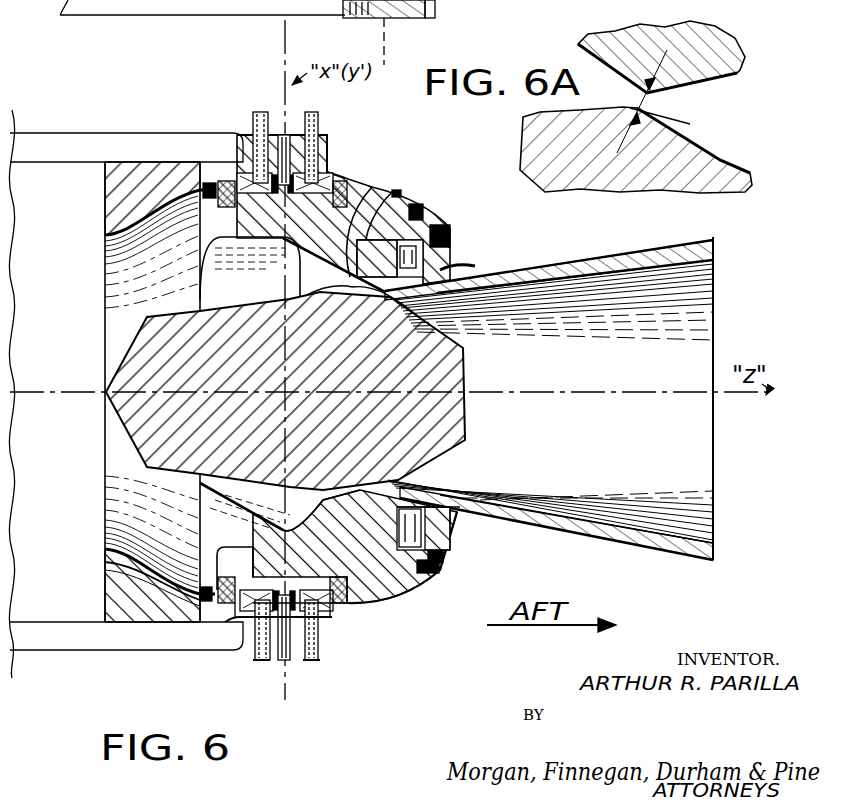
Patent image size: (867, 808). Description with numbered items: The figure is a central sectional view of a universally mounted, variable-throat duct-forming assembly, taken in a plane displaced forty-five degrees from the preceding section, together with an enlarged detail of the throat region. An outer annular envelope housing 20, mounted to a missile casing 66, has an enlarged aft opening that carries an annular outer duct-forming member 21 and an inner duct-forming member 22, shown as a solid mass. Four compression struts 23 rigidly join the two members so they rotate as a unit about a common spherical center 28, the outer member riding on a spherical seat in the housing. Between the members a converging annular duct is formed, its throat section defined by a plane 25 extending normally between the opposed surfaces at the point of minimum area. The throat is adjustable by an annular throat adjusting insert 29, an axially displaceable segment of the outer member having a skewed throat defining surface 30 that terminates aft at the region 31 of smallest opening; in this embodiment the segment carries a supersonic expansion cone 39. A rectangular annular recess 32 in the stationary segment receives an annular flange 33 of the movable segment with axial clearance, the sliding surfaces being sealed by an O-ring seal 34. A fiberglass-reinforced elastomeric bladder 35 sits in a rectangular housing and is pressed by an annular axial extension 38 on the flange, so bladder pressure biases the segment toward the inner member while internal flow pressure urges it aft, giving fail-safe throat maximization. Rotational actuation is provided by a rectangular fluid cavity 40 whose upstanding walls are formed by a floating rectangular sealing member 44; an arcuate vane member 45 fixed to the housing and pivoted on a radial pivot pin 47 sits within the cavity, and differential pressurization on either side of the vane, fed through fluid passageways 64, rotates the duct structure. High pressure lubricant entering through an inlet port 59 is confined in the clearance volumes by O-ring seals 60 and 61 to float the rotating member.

In FIG. 6, the outer annular envelope housing 20 is at (333, 163).
In FIG. 6, the annular outer duct-forming member 21 is at (312, 236).
In FIG. 6, the inner duct-forming member 22 is at (358, 383).
In FIG. 6A, the inner duct-forming member 22 is at (720, 163).
In FIG. 6, the compression struts 23 is at (285, 304).
In FIG. 6A, the plane 25 is at (680, 122).
In FIG. 6, the spherical center 28 is at (280, 399).
In FIG. 6, the annular throat adjusting insert 29 is at (427, 295).
In FIG. 6A, the annular throat adjusting insert 29 is at (742, 57).
In FIG. 6, the throat defining surface 30 is at (353, 288).
In FIG. 6A, the throat defining surface 30 is at (582, 43).
In FIG. 6, the region 31 is at (393, 300).
In FIG. 6A, the region 31 is at (667, 98).
In FIG. 6, the annular groove or recess 32 is at (362, 233).
In FIG. 6, the annular flange 33 is at (373, 240).
In FIG. 6, the O-ring seal 34 is at (380, 594).
In FIG. 6, the bladder 35 is at (448, 548).
In FIG. 6, the annular axial extension 38 is at (402, 202).
In FIG. 6, the supersonic expansion cone 39 is at (660, 558).
In FIG. 6, the fluid cavity 40 is at (275, 535).
In FIG. 6, the floating rectangular sealing member 44 is at (215, 592).
In FIG. 6, the arcuate vane member 45 is at (330, 621).
In FIG. 6, the pivot pin 47 is at (260, 675).
In FIG. 6, the inlet port 59 is at (403, 193).
In FIG. 6, the O-ring seal 60 is at (424, 213).
In FIG. 6, the O-ring seal 61 is at (212, 183).
In FIG. 6, the fluid passageways 64 is at (254, 142).
In FIG. 6, the missile casing 66 is at (27, 130).